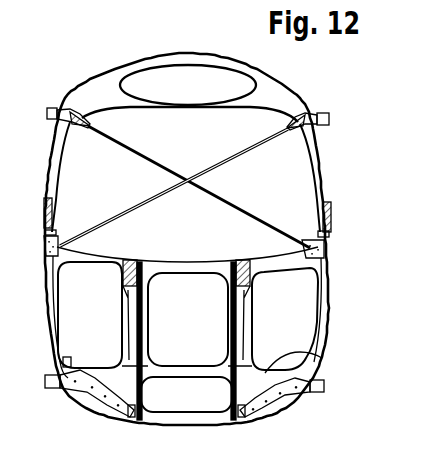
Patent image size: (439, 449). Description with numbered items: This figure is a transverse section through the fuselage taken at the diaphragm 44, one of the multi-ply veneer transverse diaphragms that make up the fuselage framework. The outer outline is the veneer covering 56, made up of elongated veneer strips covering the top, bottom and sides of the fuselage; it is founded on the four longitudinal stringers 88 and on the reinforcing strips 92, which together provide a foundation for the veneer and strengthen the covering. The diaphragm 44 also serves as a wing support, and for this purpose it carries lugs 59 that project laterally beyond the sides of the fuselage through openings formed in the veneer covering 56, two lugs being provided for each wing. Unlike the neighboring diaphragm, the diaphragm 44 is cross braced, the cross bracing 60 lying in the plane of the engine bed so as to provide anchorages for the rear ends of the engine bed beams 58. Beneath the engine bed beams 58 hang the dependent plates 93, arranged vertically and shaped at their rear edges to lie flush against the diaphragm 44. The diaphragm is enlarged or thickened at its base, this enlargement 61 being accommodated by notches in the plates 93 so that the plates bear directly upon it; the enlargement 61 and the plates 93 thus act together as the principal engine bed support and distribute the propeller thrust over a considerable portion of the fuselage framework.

The veneer covering 56 is at (49, 176).
The lugs 59 is at (46, 117).
The stringers 88 is at (61, 353).
The reinforcing strips 92 is at (46, 213).
The diaphragm 44 is at (326, 255).
The engine bed beams 58 is at (124, 260).
The cross bracing 60 is at (197, 262).
The dependent plates 93 is at (231, 332).
The enlargement 61 is at (306, 360).